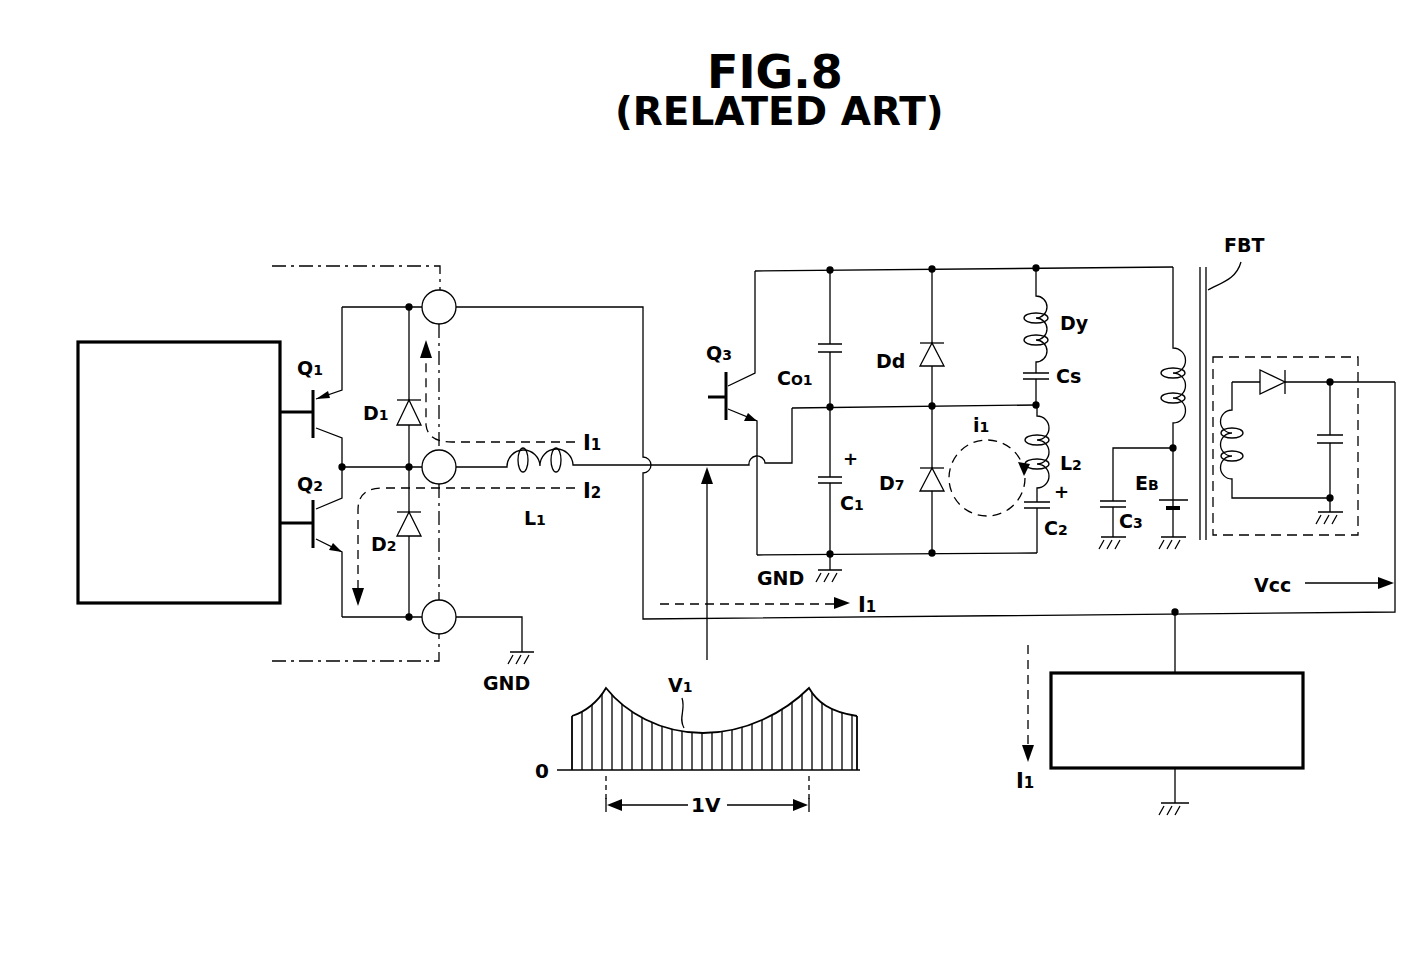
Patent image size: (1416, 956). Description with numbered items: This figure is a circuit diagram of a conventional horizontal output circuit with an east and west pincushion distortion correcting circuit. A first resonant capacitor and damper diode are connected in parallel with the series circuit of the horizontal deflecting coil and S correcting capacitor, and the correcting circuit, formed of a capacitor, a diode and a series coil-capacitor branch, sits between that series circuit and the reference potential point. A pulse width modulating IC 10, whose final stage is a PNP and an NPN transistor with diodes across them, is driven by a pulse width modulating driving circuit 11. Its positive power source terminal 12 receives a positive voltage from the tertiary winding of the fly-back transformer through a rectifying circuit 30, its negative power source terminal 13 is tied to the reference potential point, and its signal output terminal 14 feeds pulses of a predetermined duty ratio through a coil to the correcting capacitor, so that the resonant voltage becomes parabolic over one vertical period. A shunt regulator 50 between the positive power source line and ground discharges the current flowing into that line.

The pulse width modulating IC 10 is at (358, 248).
The pulse width modulating driving circuit 11 is at (195, 341).
The positive power source terminal 12 is at (452, 293).
The negative power source terminal 13 is at (452, 606).
The signal output terminal 14 is at (452, 455).
The rectifying circuit 30 is at (1315, 356).
The shunt regulator 50 is at (1305, 705).